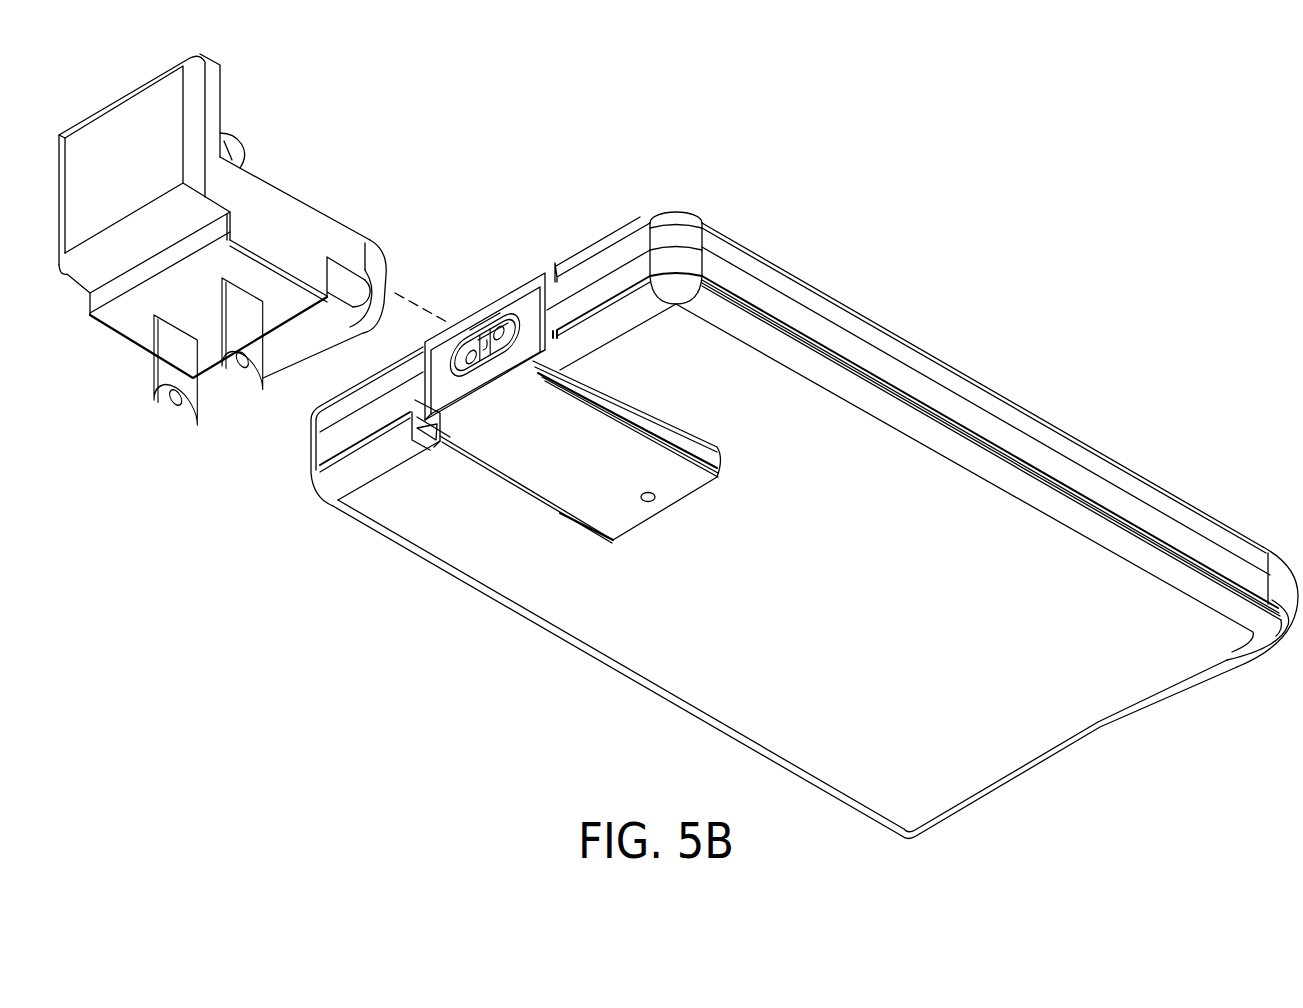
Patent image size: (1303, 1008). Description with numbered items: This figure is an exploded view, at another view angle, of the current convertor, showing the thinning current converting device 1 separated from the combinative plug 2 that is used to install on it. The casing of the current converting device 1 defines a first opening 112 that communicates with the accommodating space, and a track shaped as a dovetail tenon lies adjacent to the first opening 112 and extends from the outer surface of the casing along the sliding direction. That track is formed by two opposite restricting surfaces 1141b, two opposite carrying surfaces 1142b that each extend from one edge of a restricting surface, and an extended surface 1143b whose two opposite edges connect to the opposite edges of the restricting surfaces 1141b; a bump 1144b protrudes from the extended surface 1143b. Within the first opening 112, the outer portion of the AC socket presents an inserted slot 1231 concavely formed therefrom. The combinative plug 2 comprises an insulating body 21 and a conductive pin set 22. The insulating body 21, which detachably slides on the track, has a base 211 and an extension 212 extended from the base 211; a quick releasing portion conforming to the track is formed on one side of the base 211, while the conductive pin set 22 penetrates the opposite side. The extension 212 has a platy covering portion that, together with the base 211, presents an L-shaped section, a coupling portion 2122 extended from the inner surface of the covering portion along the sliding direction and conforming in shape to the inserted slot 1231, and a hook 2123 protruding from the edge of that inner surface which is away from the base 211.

The current converting device 1 is at (984, 350).
The first opening 112 is at (526, 298).
The inserted slot 1231 is at (494, 325).
The restricting surfaces 1141b is at (440, 432).
The carrying surfaces 1142b is at (432, 428).
The extended surface 1143b is at (540, 457).
The bump 1144b is at (648, 504).
The combinative plug 2 is at (68, 450).
The insulating body 21 is at (68, 400).
The base 211 is at (122, 317).
The extension 212 is at (80, 181).
The coupling portion 2122 is at (228, 150).
The hook 2123 is at (220, 65).
The conductive pin set 22 is at (159, 386).